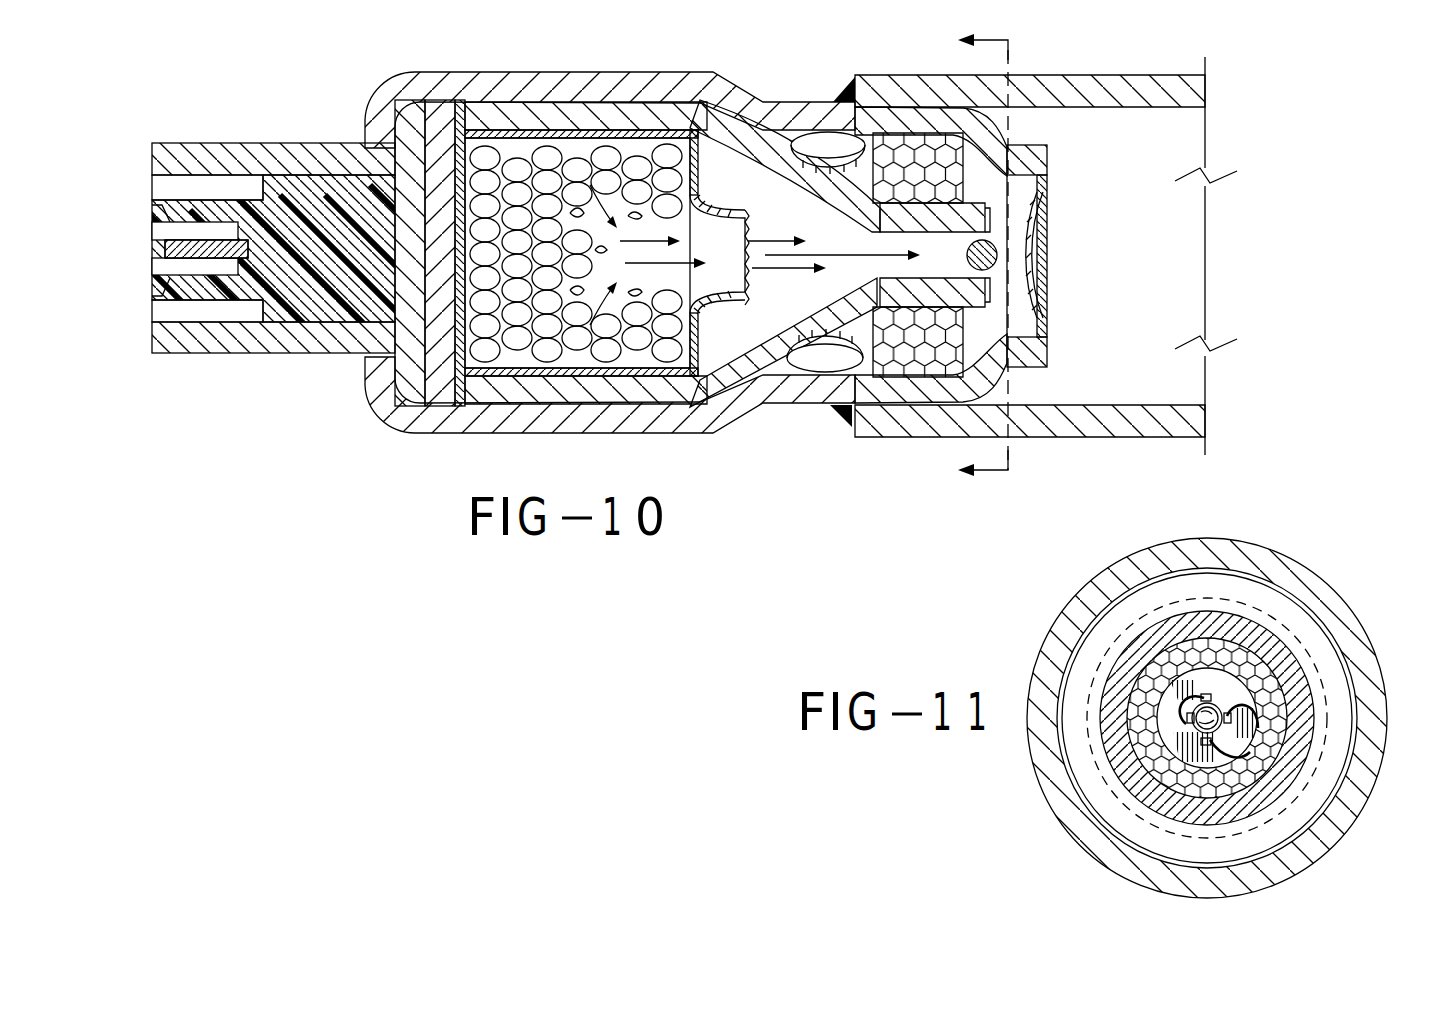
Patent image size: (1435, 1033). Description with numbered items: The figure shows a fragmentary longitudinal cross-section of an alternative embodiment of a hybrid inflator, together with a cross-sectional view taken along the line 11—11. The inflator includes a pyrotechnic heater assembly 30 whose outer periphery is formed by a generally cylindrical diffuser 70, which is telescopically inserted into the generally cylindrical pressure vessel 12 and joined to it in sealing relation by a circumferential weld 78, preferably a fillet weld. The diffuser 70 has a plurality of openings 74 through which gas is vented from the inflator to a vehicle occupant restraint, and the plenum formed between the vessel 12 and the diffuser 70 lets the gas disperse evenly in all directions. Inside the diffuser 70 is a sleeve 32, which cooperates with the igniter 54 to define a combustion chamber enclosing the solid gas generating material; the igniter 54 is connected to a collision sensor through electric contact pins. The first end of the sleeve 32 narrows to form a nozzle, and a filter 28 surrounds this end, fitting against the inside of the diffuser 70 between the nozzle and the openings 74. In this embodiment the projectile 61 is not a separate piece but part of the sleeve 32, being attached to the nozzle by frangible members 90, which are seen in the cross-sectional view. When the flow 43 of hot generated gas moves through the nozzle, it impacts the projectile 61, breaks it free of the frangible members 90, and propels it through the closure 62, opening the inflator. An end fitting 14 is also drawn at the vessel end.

In FIG. 10, the section line 11— 11 is at (961, 255).
In FIG. 10, the pressure vessel 12 is at (1105, 85).
In FIG. 11, the pressure vessel 12 is at (1260, 556).
In FIG. 10, the end fitting 14 is at (1078, 370).
In FIG. 10, the filter 28 is at (905, 352).
In FIG. 11, the filter 28 is at (1190, 645).
In FIG. 10, the pyrotechnic heater assembly 30 is at (382, 65).
In FIG. 10, the sleeve 32 is at (767, 352).
In FIG. 10, the flow of hot generated gas 43 is at (838, 250).
In FIG. 10, the igniter 54 is at (285, 190).
In FIG. 10, the projectile 61 is at (995, 262).
In FIG. 11, the projectile 61 is at (1213, 707).
In FIG. 10, the closure 62 is at (1040, 235).
In FIG. 11, the diffuser 70 is at (1170, 810).
In FIG. 10, the openings 74 is at (833, 142).
In FIG. 10, the circumferential weld 78 is at (840, 418).
In FIG. 10, the frangible members 90 is at (988, 250).
In FIG. 11, the frangible members 90 is at (1185, 715).